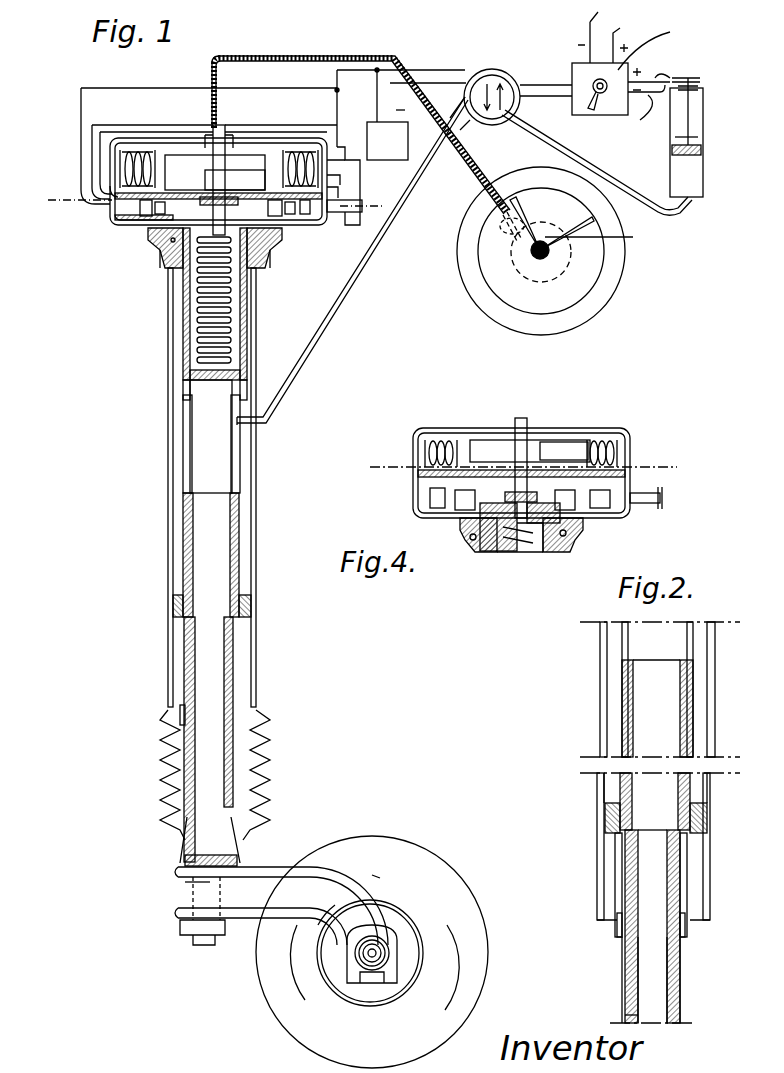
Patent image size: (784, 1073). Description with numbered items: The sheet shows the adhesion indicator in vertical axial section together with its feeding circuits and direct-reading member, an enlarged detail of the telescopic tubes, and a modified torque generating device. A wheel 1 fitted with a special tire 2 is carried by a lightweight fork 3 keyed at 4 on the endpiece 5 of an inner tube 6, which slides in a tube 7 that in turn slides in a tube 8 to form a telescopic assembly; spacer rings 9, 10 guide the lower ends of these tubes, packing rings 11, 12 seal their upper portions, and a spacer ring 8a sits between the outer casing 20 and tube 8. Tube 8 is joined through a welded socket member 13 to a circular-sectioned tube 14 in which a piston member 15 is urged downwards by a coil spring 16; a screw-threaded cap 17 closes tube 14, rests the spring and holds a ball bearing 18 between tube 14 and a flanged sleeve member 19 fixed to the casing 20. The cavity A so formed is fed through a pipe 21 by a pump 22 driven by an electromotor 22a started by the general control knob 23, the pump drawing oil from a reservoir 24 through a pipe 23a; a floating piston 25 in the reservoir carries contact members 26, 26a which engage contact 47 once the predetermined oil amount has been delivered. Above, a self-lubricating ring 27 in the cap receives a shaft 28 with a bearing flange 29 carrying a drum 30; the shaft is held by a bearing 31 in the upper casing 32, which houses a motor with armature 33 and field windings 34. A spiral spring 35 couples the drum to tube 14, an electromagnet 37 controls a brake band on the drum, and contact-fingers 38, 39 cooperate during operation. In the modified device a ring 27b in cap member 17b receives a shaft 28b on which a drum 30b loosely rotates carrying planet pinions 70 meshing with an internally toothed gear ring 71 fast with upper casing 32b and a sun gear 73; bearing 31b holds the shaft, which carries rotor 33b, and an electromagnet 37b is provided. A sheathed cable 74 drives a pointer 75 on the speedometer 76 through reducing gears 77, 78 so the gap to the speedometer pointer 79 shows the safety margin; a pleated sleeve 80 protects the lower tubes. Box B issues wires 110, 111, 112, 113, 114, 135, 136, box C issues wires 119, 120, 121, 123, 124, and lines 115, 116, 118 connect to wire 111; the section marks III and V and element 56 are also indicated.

In FIG. 1, the wheel 1 is at (410, 930).
In FIG. 1, the tire 2 is at (470, 928).
In FIG. 1, the fork 3 is at (272, 888).
In FIG. 1, the key 4 is at (222, 900).
In FIG. 1, the endpiece 5 is at (195, 882).
In FIG. 1, the tube 6 is at (188, 838).
In FIG. 2, the tube 6 is at (625, 1010).
In FIG. 1, the tube 7 is at (185, 750).
In FIG. 2, the tube 7 is at (622, 977).
In FIG. 1, the tube 8 is at (185, 448).
In FIG. 2, the tube 8 is at (710, 895).
In FIG. 1, the spacer ring 8a is at (174, 605).
In FIG. 2, the spacer ring 8a is at (707, 812).
In FIG. 1, the spacer ring 9 is at (183, 808).
In FIG. 1, the spacer ring 10 is at (182, 712).
In FIG. 2, the spacer ring 10 is at (617, 930).
In FIG. 2, the packing ring 11 is at (627, 853).
In FIG. 2, the packing ring 12 is at (622, 680).
In FIG. 1, the welded socket member 13 is at (185, 408).
In FIG. 1, the circular-sectioned tube 14 is at (198, 316).
In FIG. 1, the piston member 15 is at (192, 380).
In FIG. 1, the coil spring 16 is at (200, 288).
In FIG. 1, the screw-threaded cap 17 is at (152, 226).
In FIG. 1, the ball bearing 18 is at (165, 238).
In FIG. 1, the flanged sleeve member 19 is at (165, 254).
In FIG. 1, the external casing 20 is at (258, 308).
In FIG. 2, the external casing 20 is at (600, 635).
In FIG. 1, the pipe 21 is at (303, 362).
In FIG. 1, the pump 22 is at (476, 80).
In FIG. 1, the electromotor 22a is at (497, 70).
In FIG. 1, the general control knob 23 is at (606, 79).
In FIG. 1, the pipe 23a is at (540, 124).
In FIG. 1, the reservoir 24 is at (700, 180).
In FIG. 1, the floating piston 25 is at (700, 152).
In FIG. 1, the contact member 26 is at (688, 76).
In FIG. 1, the contact member 26a is at (700, 138).
In FIG. 1, the self-lubricating ring 27 is at (230, 196).
In FIG. 1, the shaft 28 is at (212, 135).
In FIG. 1, the bearing flange 29 is at (206, 195).
In FIG. 4, the bearing flange 29 is at (530, 451).
In FIG. 1, the drum 30 is at (310, 215).
In FIG. 1, the bearing 31 is at (228, 135).
In FIG. 1, the upper casing 32 is at (276, 140).
In FIG. 1, the armature 33 is at (243, 158).
In FIG. 1, the field windings 34 is at (134, 150).
In FIG. 1, the spiral spring 35 is at (280, 216).
In FIG. 1, the electromagnet 37 is at (360, 215).
In FIG. 1, the electric contact-finger 38 is at (118, 217).
In FIG. 1, the electric contact-finger 39 is at (110, 196).
In FIG. 1, the contact 47 is at (698, 84).
In FIG. 1, the bearing 56 is at (147, 200).
In FIG. 4, the planet pinions 70 is at (462, 440).
In FIG. 4, the internally toothed gear ring 71 is at (418, 480).
In FIG. 4, the sun gear 73 is at (490, 470).
In FIG. 1, the sheathed cable 74 is at (372, 72).
In FIG. 1, the pointer 75 is at (600, 238).
In FIG. 1, the speedometer 76 is at (460, 218).
In FIG. 1, the reducing gear 77 is at (505, 226).
In FIG. 1, the reducing gear 78 is at (520, 276).
In FIG. 1, the speedometer pointer 79 is at (533, 254).
In FIG. 1, the pleated sleeve 80 is at (262, 712).
In FIG. 1, the wire 110 is at (622, 30).
In FIG. 1, the wire 111 is at (426, 58).
In FIG. 1, the wire 112 is at (608, 31).
In FIG. 1, the wire 113 is at (655, 63).
In FIG. 1, the wire 114 is at (653, 110).
In FIG. 1, the line 115 is at (81, 160).
In FIG. 1, the line 116 is at (336, 142).
In FIG. 1, the line 118 is at (348, 170).
In FIG. 1, the wire 119 is at (92, 138).
In FIG. 1, the wire 120 is at (105, 130).
In FIG. 1, the wire 121 is at (337, 226).
In FIG. 1, the wire 123 is at (352, 190).
In FIG. 1, the wire 124 is at (446, 104).
In FIG. 1, the wire 135 is at (533, 106).
In FIG. 1, the wire 136 is at (556, 120).
In FIG. 4, the cap member 17b is at (548, 552).
In FIG. 4, the self-lubricating ring member 27b is at (505, 552).
In FIG. 4, the shaft 28b is at (536, 435).
In FIG. 4, the drum 30b is at (455, 508).
In FIG. 4, the self-lubricating bearing 31b is at (528, 430).
In FIG. 4, the upper casing 32b is at (620, 433).
In FIG. 4, the rotor 33b is at (564, 451).
In FIG. 4, the electromagnet 37b is at (664, 498).
In FIG. 1, the cavity A is at (228, 452).
In FIG. 1, the box B is at (651, 42).
In FIG. 1, the box C is at (387, 135).
In FIG. 1, the section line III is at (206, 212).
In FIG. 4, the section line V is at (523, 457).